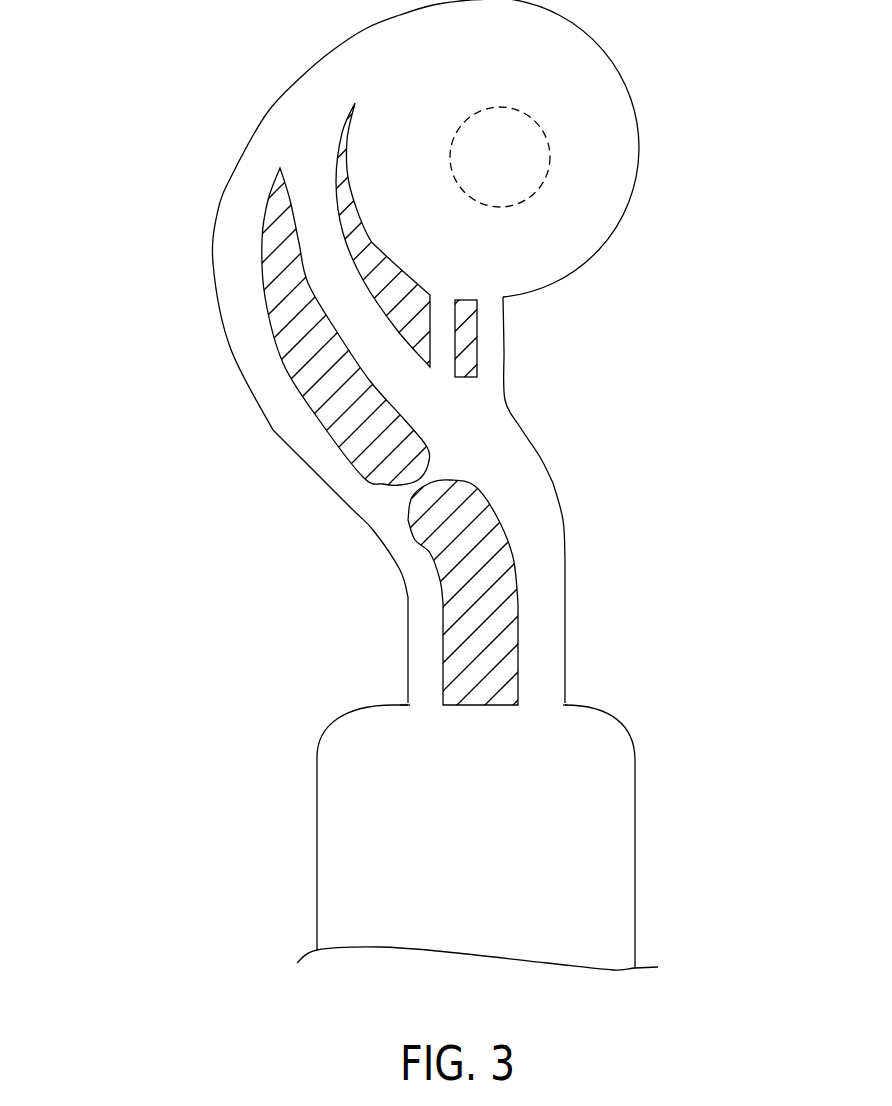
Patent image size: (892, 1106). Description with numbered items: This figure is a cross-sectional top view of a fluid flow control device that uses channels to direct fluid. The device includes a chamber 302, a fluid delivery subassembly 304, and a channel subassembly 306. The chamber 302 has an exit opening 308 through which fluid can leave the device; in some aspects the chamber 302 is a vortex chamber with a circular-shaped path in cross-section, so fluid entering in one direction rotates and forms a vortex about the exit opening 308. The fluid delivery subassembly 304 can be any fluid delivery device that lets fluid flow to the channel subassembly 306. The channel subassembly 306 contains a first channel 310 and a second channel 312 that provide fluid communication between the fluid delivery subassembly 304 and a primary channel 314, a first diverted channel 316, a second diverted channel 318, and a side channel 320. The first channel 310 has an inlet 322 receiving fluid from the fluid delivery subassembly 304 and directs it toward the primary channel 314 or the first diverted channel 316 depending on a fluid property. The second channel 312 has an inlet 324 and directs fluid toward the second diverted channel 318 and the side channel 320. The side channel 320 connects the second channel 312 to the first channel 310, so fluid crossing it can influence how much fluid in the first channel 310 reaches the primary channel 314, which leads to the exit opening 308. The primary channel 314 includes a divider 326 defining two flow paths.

The chamber 302 is at (652, 103).
The fluid delivery subassembly 304 is at (635, 759).
The channel subassembly 306 is at (624, 452).
The exit opening 308 is at (551, 162).
The first channel 310 is at (567, 600).
The second channel 312 is at (408, 628).
The primary channel 314 is at (505, 377).
The first diverted channel 316 is at (290, 218).
The second diverted channel 318 is at (229, 346).
The side channel 320 is at (443, 470).
The inlet 322 is at (545, 700).
The inlet 324 is at (410, 700).
The divider 326 is at (479, 332).